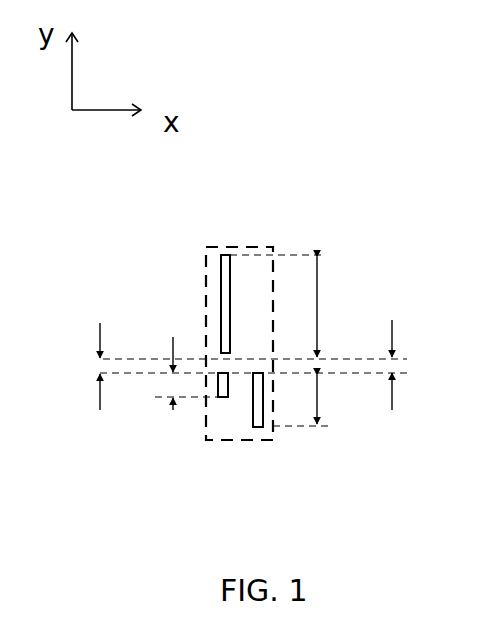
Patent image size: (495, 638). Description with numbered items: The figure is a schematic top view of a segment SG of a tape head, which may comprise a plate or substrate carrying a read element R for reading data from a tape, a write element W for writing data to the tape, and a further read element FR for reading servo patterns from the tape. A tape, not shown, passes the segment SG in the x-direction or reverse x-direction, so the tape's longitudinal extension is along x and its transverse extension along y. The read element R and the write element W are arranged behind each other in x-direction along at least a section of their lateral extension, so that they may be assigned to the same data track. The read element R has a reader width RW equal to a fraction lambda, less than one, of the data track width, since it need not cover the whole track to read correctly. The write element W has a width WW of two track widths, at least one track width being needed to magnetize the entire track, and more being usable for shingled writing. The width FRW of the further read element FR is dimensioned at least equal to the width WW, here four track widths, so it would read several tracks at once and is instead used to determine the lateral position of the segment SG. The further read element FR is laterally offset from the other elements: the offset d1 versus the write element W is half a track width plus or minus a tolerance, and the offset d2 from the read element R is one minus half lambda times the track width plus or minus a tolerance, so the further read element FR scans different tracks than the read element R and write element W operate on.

The segment SG is at (220, 247).
The further read element FR is at (230, 305).
The read element R is at (231, 372).
The write element W is at (257, 427).
The width of the further read element FRW is at (362, 307).
The width of the write element WW is at (333, 427).
The reader width RW is at (189, 408).
The offset d1 is at (416, 365).
The offset d2 is at (97, 348).